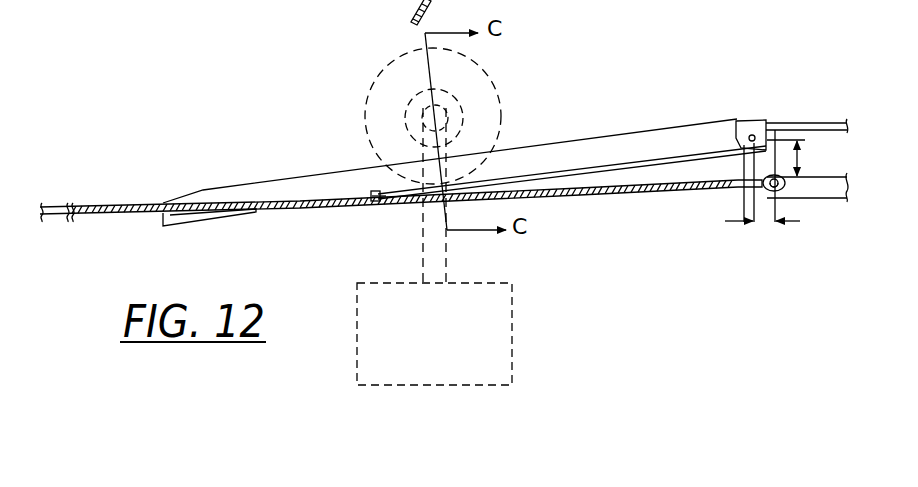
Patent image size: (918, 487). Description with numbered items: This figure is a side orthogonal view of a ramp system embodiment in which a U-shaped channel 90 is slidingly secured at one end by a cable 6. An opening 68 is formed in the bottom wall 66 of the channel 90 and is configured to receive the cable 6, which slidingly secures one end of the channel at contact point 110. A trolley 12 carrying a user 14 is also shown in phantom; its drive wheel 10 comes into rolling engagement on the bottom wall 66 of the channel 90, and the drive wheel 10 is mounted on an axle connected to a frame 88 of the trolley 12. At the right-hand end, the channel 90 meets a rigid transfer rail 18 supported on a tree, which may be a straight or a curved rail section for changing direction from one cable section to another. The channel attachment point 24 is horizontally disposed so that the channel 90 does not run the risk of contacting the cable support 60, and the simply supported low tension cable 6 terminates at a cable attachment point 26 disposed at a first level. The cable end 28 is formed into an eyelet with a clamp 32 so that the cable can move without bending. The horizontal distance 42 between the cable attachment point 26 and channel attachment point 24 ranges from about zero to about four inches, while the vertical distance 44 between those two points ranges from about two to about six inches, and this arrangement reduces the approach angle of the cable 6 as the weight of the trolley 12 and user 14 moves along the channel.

The cable 6 is at (130, 213).
The drive wheel 10 is at (483, 64).
The trolley 12 is at (481, 334).
The user 14 is at (513, 348).
The transfer rail 18 is at (803, 122).
The channel attachment point 24 is at (743, 133).
The cable attachment point 26 is at (782, 190).
The cable end 28 is at (772, 200).
The clamp 32 is at (737, 205).
The horizontal distance 42 is at (796, 223).
The vertical distance 44 is at (798, 158).
The cable support 60 is at (845, 201).
The bottom wall 66 is at (530, 172).
The opening 68 is at (273, 216).
The frame 88 is at (450, 242).
The channel 90 is at (605, 135).
The contact point 110 is at (383, 191).